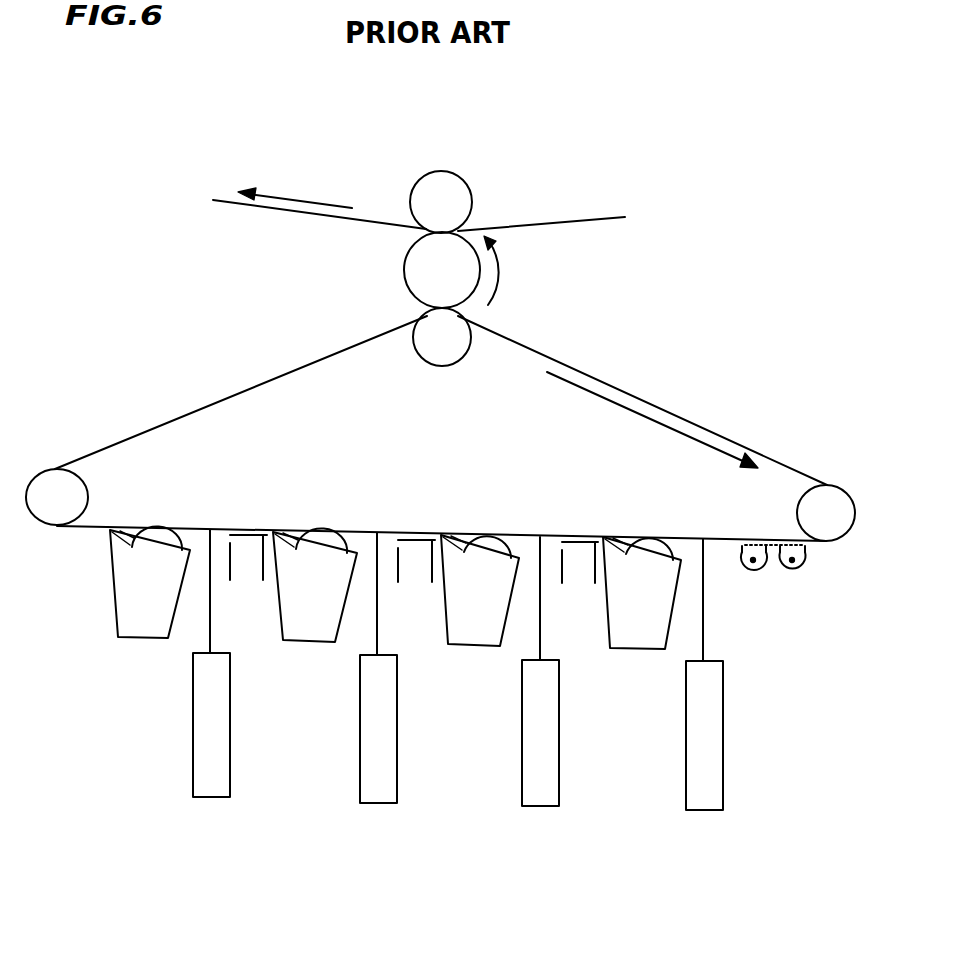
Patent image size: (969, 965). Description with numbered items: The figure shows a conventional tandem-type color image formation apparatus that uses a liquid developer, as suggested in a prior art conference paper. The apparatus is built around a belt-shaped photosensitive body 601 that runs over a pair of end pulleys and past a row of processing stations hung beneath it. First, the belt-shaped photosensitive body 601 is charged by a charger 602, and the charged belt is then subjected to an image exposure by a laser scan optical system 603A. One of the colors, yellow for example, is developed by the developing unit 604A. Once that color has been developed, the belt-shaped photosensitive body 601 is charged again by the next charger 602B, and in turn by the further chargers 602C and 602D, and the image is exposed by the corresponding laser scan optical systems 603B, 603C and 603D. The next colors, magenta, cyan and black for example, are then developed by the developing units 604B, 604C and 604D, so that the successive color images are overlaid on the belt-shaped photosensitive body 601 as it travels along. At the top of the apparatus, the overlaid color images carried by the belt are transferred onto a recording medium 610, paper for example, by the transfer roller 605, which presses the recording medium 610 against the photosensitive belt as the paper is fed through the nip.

The belt-shaped photosensitive body 601 is at (673, 413).
The charger 602 is at (790, 572).
The charger 602B is at (577, 553).
The charger 602C is at (413, 552).
The charger 602D is at (247, 547).
The laser scan optical system 603A is at (707, 798).
The laser scan optical system 603B is at (543, 792).
The laser scan optical system 603C is at (380, 790).
The laser scan optical system 603D is at (215, 787).
The developing unit 604A is at (638, 639).
The developing unit 604B is at (478, 637).
The developing unit 604C is at (315, 627).
The developing unit 604D is at (147, 627).
The transfer roller 605 is at (433, 272).
The recording medium 610 is at (583, 221).